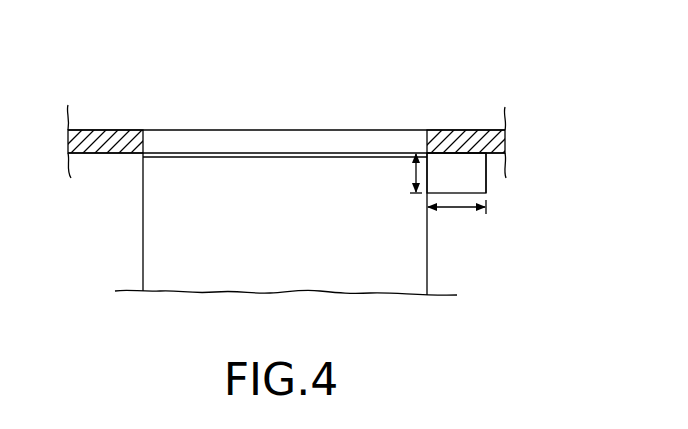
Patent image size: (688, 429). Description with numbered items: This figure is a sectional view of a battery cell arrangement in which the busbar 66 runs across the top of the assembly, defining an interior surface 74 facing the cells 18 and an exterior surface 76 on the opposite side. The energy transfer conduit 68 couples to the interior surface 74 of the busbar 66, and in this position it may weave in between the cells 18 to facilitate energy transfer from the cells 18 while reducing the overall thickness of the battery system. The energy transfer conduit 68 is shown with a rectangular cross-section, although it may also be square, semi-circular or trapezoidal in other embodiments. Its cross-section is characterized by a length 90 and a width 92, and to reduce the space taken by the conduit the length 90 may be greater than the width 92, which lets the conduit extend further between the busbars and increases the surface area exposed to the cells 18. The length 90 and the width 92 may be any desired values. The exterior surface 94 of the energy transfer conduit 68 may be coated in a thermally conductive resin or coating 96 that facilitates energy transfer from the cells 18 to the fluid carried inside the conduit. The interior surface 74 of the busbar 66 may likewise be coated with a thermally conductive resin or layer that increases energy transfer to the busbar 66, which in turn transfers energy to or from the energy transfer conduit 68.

The battery cell 18 is at (175, 235).
The busbar 66 is at (121, 140).
The energy transfer conduit 68 is at (474, 150).
The interior surface 74 is at (107, 160).
The exterior surface 76 is at (252, 130).
The length 90 is at (416, 172).
The width 92 is at (458, 210).
The exterior surface 94 is at (480, 170).
The thermally conductive resin or coating 96 is at (486, 183).